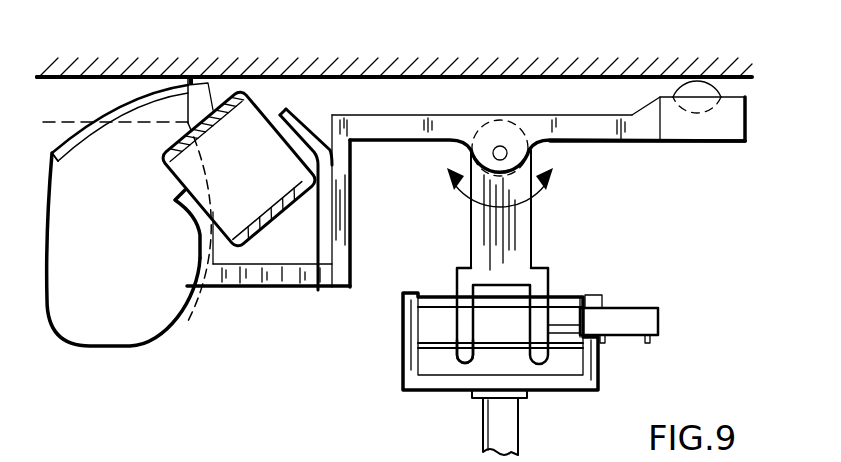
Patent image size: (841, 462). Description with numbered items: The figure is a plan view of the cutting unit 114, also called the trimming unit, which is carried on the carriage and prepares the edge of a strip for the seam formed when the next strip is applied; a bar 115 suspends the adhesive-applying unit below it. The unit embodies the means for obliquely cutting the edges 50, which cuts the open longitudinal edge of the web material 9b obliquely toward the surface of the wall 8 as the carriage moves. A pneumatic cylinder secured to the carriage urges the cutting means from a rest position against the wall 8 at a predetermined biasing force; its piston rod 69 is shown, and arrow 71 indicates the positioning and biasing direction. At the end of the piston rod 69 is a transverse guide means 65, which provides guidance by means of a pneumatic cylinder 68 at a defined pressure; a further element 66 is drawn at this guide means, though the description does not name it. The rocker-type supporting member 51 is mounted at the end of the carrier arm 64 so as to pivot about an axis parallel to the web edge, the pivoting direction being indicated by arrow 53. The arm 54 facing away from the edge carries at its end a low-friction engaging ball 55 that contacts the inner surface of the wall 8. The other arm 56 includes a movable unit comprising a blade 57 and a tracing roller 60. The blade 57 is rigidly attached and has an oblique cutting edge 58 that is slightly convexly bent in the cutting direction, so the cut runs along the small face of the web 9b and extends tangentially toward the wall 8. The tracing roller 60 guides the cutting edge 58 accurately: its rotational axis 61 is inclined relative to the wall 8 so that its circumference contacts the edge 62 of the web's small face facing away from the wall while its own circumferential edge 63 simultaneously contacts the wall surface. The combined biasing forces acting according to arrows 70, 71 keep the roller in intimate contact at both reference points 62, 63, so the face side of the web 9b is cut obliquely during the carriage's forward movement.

The wall 8 is at (452, 63).
The web material 9b is at (118, 92).
The means for obliquely cutting the edges 50 is at (688, 230).
The rocker-type supporting member 51 is at (398, 152).
The arrow 53 is at (513, 208).
The arm 54 is at (610, 134).
The engaging ball 55 is at (718, 78).
The arm 56 is at (268, 287).
The blade 57 is at (102, 331).
The cutting edge 58 is at (117, 117).
The tracing roller 60 is at (178, 167).
The rotational axis 61 is at (197, 240).
The edge 62 is at (205, 141).
The circumferential edge 63 is at (240, 102).
The carrier arm 64 is at (517, 250).
The transverse guide means 65 is at (560, 364).
The fork prong 66 is at (463, 360).
The pneumatic cylinder 68 is at (660, 318).
The piston rod 69 is at (487, 423).
The arrow 70 is at (548, 242).
The arrow 71 is at (535, 415).
The cutting unit 114 is at (326, 332).
The bar 115 is at (127, 237).